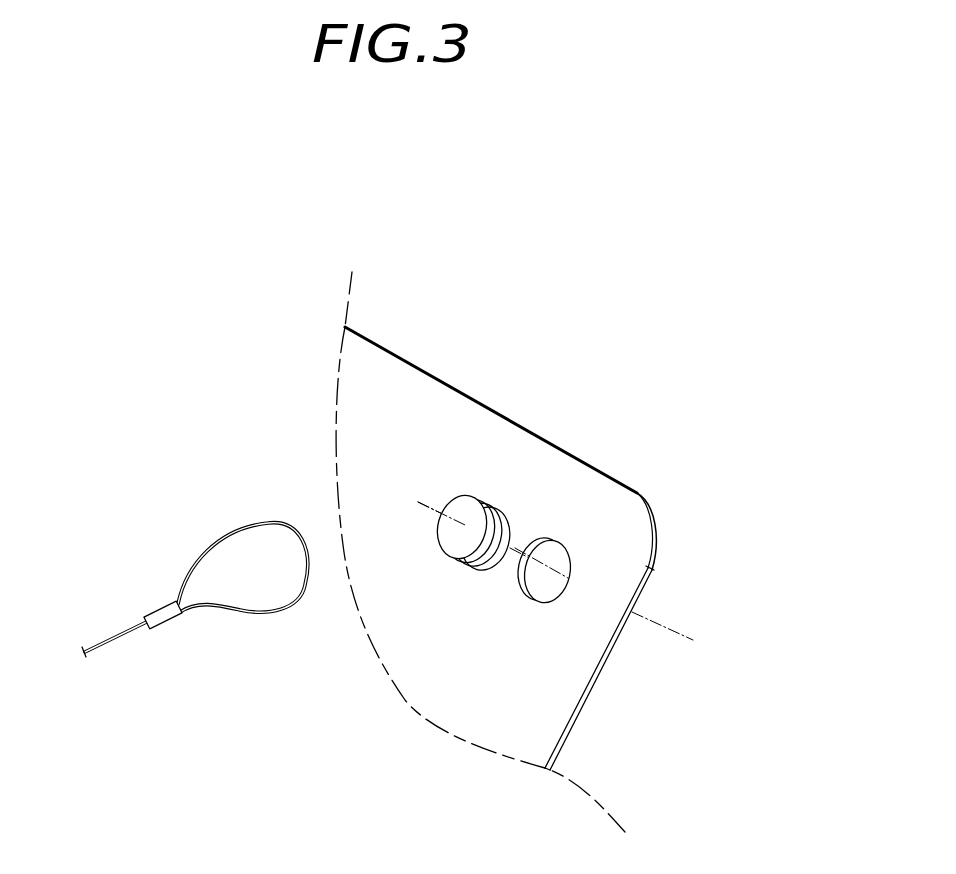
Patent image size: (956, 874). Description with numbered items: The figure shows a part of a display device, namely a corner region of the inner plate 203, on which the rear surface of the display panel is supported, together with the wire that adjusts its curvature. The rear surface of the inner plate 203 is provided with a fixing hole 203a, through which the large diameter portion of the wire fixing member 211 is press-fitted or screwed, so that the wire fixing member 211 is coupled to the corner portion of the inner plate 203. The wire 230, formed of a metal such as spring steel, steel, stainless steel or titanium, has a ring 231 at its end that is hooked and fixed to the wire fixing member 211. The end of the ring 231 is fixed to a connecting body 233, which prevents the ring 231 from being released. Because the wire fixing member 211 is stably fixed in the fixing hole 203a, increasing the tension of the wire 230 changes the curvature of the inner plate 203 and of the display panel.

The inner plate 203 is at (575, 673).
The fixing hole 203a is at (538, 535).
The wire fixing member 211 is at (472, 508).
The wire 230 is at (148, 544).
The ring 231 is at (219, 530).
The connecting body 233 is at (163, 620).